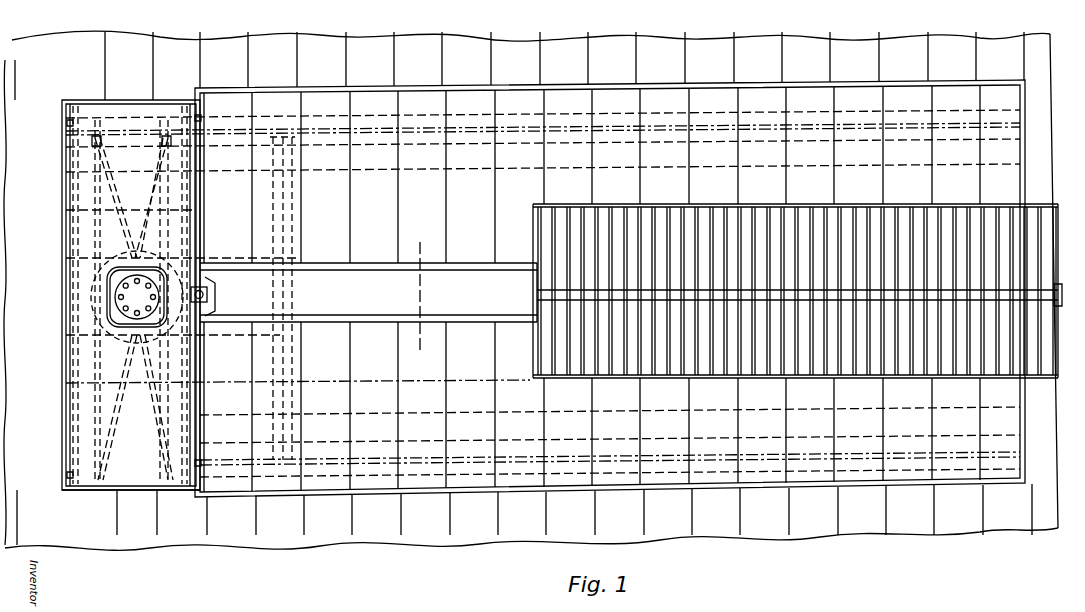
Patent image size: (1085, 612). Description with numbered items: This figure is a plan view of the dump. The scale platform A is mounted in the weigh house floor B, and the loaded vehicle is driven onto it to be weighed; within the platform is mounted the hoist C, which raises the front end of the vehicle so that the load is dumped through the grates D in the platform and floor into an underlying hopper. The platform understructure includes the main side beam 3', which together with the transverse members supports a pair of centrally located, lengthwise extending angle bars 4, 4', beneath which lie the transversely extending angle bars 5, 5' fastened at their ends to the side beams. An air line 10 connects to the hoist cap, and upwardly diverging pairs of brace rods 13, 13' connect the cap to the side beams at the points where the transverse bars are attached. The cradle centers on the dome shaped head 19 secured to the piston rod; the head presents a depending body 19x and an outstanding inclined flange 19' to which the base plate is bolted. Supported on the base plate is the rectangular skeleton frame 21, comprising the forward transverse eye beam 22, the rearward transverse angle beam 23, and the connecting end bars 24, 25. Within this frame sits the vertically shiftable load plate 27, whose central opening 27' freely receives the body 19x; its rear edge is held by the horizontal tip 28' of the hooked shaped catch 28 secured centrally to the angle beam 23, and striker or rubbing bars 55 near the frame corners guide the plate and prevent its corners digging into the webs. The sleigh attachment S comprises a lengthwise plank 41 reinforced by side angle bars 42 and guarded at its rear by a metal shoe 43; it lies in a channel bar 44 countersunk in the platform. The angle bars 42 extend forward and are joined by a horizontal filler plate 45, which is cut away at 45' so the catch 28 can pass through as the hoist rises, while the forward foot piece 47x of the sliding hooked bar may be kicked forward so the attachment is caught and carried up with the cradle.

The scale platform A is at (610, 288).
The weigh house floor B is at (503, 47).
The hoist C is at (183, 300).
The grates D is at (740, 236).
The sleigh attachment S is at (368, 292).
The main side beam 3' is at (543, 285).
The lengthwise extending angle bar 4 is at (253, 352).
The lengthwise extending angle bar 4' is at (262, 298).
The transversely extending angle bar 5 is at (64, 197).
The transversely extending angle bar 5' is at (200, 187).
The air line 10 is at (430, 291).
The brace rod 13 is at (131, 308).
The brace rod 13' is at (136, 309).
The dome shaped head 19 is at (98, 297).
The inclined flange 19' is at (106, 297).
The depending body 19x is at (106, 282).
The skeleton frame 21 is at (63, 232).
The forward transverse eye beam 22 is at (70, 403).
The rearward transverse angle beam 23 is at (196, 403).
The connecting end bar 24 is at (106, 492).
The connecting end bar 25 is at (120, 101).
The load plate 27 is at (131, 342).
The opening 27' is at (199, 344).
The hooked shaped catch 28 is at (216, 299).
The horizontal tip 28' is at (226, 293).
The plank 41 is at (387, 270).
The angle bars 42 is at (331, 265).
The metal shoe 43 is at (536, 286).
The channel bar 44 is at (471, 268).
The horizontal filler plate 45 is at (285, 283).
The cut away 45' is at (213, 262).
The forward foot piece 47x is at (268, 305).
The striker or rubbing bars 55 is at (201, 119).